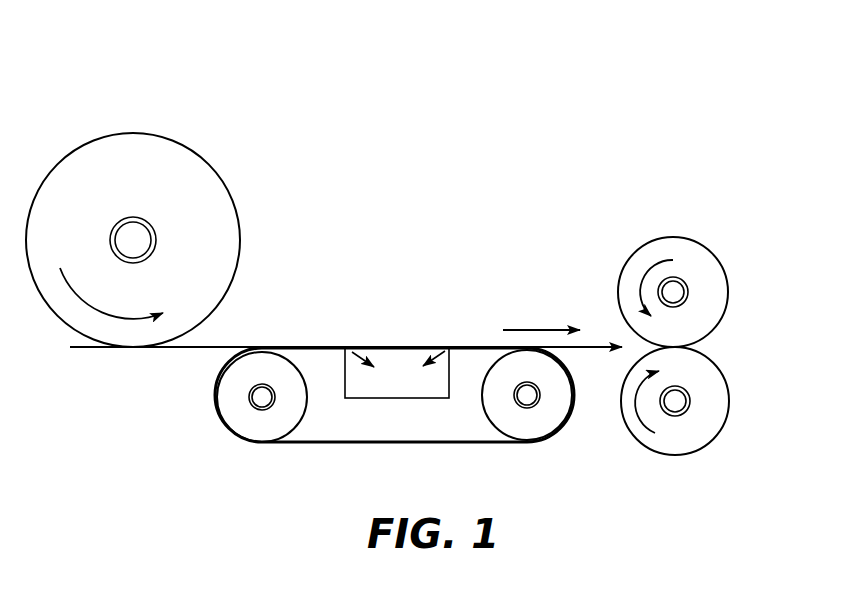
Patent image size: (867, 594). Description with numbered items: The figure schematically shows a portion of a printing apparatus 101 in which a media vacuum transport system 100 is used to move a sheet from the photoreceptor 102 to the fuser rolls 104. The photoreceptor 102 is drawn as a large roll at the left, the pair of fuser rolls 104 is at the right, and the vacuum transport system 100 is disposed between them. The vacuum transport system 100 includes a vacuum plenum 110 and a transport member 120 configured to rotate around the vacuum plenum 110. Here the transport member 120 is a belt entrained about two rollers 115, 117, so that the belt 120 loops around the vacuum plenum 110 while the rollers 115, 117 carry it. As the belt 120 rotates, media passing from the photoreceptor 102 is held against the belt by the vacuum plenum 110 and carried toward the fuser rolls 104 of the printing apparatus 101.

The printing apparatus 101 is at (188, 94).
The photoreceptor 102 is at (202, 176).
The media vacuum transport system 100 is at (206, 443).
The transport member 120 is at (335, 445).
The roller 115 is at (265, 433).
The roller 117 is at (533, 428).
The vacuum plenum 110 is at (410, 393).
The fuser rolls 104 is at (698, 346).